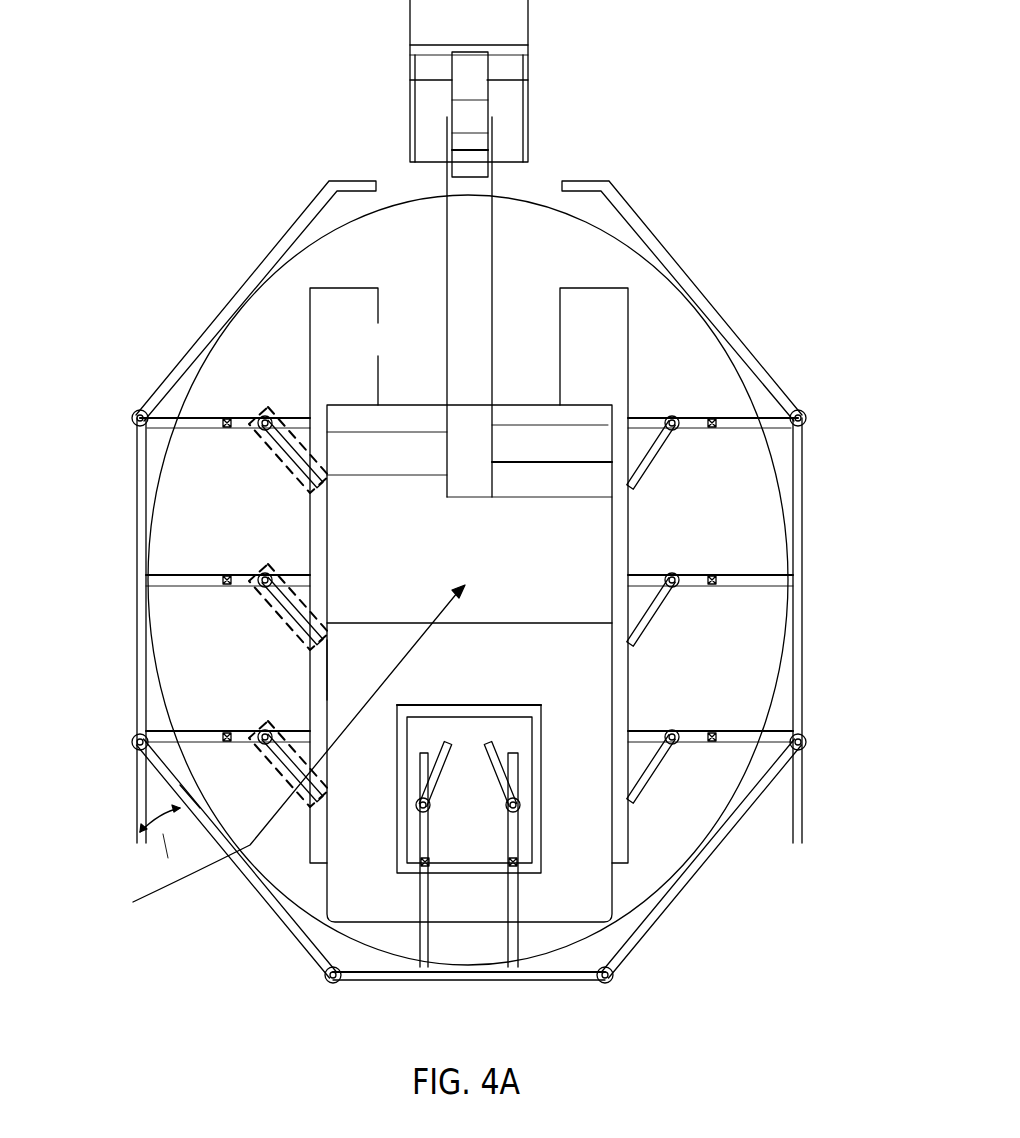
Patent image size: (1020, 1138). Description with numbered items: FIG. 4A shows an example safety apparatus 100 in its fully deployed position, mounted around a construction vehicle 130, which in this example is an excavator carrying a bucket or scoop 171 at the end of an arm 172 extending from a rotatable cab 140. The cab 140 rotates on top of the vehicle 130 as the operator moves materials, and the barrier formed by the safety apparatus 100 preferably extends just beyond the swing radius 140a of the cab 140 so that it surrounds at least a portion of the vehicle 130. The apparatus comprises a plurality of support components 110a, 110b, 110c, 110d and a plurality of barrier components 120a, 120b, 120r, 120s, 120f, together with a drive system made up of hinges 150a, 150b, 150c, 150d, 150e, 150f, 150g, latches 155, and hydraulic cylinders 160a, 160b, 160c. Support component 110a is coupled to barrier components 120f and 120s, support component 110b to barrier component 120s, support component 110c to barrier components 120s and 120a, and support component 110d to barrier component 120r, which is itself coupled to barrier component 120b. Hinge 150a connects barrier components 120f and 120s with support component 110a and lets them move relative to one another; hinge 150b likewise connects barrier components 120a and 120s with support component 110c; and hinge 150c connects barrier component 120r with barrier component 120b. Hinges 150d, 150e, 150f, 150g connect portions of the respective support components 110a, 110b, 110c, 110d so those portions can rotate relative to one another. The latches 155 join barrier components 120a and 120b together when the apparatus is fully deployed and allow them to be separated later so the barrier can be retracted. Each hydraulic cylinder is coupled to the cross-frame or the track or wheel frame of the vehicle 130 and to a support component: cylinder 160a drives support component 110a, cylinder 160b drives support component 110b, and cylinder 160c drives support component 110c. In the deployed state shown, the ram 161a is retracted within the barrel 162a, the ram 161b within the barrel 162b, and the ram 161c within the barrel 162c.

The safety apparatus 100 is at (220, 222).
The support component 110a is at (248, 415).
The support component 110b is at (245, 574).
The support component 110c is at (247, 730).
The support component 110d is at (427, 828).
The barrier component 120a is at (160, 778).
The barrier component 120b is at (278, 917).
The barrier component 120f is at (232, 313).
The barrier component 120r is at (455, 982).
The barrier component 120s is at (140, 500).
The construction vehicle 130 is at (412, 392).
The rotatable cab 140 is at (486, 675).
The swing radius 140a is at (372, 705).
The hinge 150a is at (133, 418).
The hinge 150b is at (133, 743).
The hinge 150c is at (338, 985).
The hinge 150d is at (227, 430).
The hinge 150e is at (227, 587).
The hinge 150f is at (712, 735).
The hinge 150g is at (425, 862).
The latches 155 is at (748, 943).
The hydraulic cylinder 160a is at (268, 416).
The hydraulic cylinder 160b is at (268, 573).
The hydraulic cylinder 160c is at (328, 787).
The ram 161a is at (274, 430).
The ram 161b is at (275, 590).
The ram 161c is at (273, 745).
The barrel 162a is at (287, 470).
The barrel 162b is at (280, 616).
The barrel 162c is at (280, 772).
The bucket 171 is at (485, 25).
The arm 172 is at (485, 295).